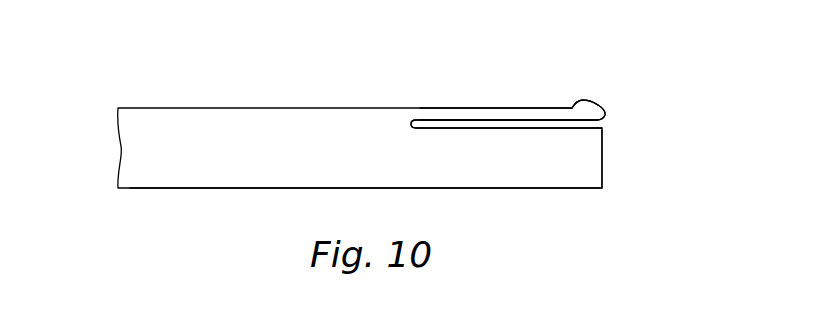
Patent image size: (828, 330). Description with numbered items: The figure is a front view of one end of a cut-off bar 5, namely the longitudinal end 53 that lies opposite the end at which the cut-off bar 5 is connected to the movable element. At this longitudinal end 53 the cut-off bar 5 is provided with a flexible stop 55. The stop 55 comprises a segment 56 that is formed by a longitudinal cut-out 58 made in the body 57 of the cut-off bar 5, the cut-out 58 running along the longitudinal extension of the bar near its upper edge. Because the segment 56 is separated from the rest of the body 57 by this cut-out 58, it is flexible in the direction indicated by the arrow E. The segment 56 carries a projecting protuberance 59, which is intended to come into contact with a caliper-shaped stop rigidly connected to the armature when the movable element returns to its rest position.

The cut-off bar 5 is at (147, 100).
The longitudinal end 53 is at (607, 165).
The flexible stop 55 is at (591, 98).
The segment 56 is at (530, 108).
The body 57 is at (488, 188).
The longitudinal cut-out 58 is at (600, 133).
The projecting protuberance 59 is at (580, 100).
The arrow E is at (621, 142).